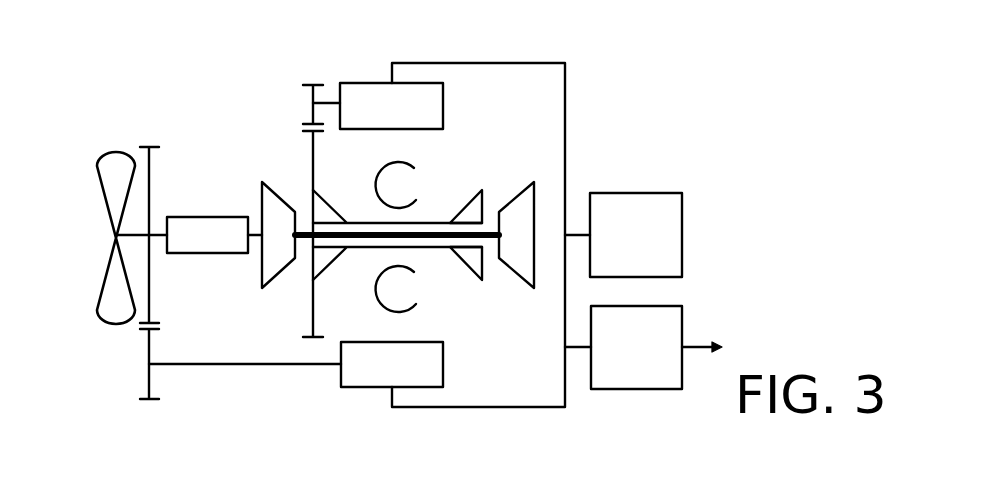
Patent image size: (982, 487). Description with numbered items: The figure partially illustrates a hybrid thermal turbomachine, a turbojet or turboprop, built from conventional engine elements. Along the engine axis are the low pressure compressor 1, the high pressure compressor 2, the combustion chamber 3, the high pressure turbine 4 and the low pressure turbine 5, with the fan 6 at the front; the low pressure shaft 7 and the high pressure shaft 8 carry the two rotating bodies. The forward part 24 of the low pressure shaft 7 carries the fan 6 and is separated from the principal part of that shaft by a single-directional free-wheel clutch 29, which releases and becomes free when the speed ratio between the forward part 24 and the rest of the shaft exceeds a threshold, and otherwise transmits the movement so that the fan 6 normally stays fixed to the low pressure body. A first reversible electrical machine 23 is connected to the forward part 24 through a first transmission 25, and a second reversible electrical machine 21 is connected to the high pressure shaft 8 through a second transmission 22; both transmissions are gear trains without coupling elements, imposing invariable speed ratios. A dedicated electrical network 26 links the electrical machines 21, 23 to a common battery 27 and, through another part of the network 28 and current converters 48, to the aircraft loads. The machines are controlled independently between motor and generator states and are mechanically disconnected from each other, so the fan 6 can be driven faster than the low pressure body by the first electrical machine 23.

The low pressure compressor 1 is at (270, 263).
The high pressure compressor 2 is at (322, 258).
The combustion chamber 3 is at (395, 187).
The high pressure turbine 4 is at (470, 257).
The low pressure turbine 5 is at (522, 262).
The fan 6 is at (100, 287).
The low pressure shaft 7 is at (303, 212).
The high pressure shaft 8 is at (373, 248).
The second reversible electrical machine 21 is at (378, 120).
The second transmission 22 is at (291, 129).
The first reversible electrical machine 23 is at (377, 380).
The forward part of the low pressure shaft 24 is at (130, 233).
The first transmission 25 is at (137, 378).
The dedicated electrical network 26 is at (565, 140).
The common battery 27 is at (617, 251).
The another part of the network 28 is at (703, 343).
The free-wheel clutch 29 is at (210, 217).
The current converters 48 is at (621, 361).